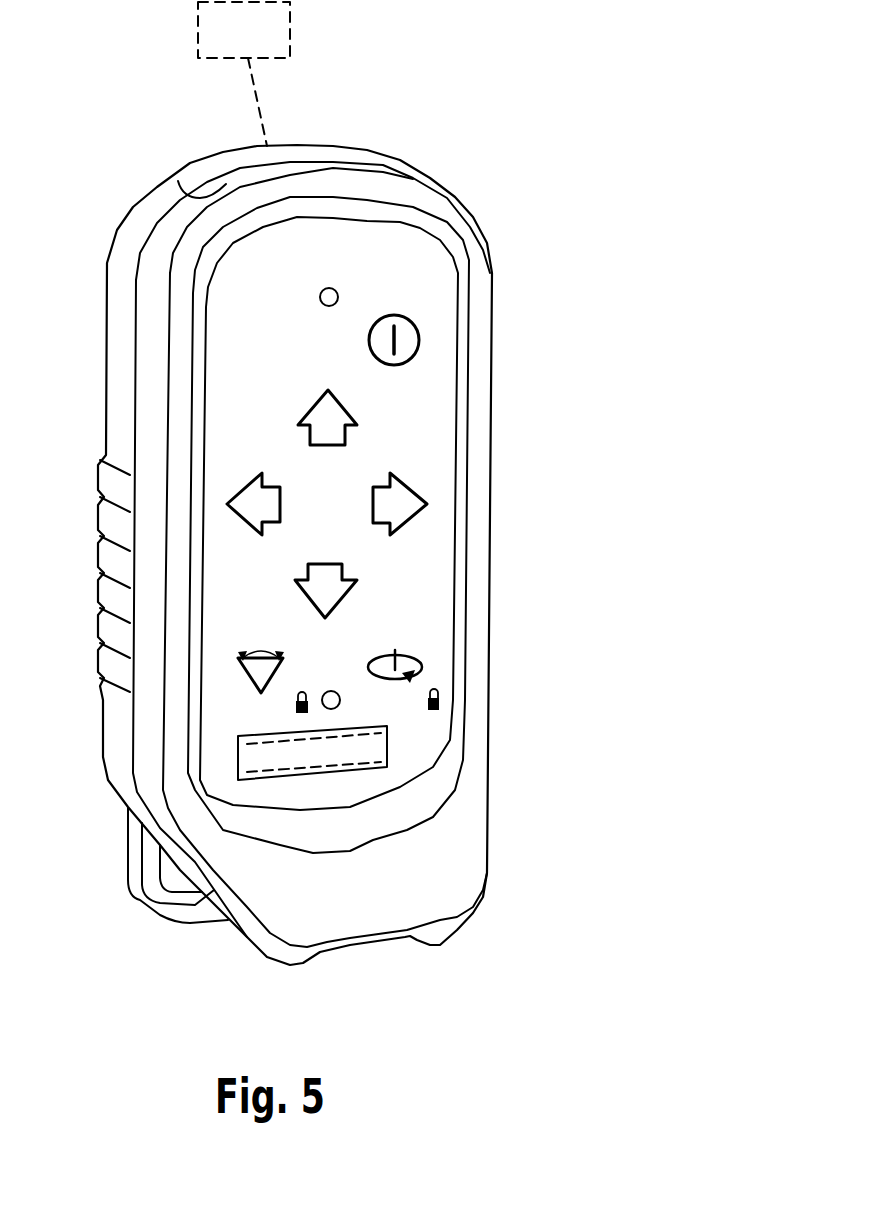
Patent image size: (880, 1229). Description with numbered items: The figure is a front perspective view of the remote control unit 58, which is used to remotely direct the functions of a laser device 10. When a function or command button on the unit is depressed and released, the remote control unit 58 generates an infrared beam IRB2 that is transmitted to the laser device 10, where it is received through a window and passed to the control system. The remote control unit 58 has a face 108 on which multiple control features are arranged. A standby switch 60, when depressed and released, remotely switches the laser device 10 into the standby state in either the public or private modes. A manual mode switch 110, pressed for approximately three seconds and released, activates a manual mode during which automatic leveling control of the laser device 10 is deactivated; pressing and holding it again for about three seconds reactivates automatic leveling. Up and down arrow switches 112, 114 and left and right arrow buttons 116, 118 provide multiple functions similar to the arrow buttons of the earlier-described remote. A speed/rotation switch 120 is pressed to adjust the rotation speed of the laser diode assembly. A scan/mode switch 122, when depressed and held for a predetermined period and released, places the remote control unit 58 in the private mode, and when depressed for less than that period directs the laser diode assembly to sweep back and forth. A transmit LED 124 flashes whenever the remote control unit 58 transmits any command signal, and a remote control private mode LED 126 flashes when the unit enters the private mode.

The laser device 10 is at (197, 28).
The infrared beam IRB2 is at (257, 90).
The remote control unit 58 is at (496, 152).
The standby switch 60 is at (419, 343).
The face 108 is at (413, 278).
The manual mode switch 110 is at (240, 347).
The up arrow switch 112 is at (322, 430).
The down arrow switch 114 is at (320, 590).
The left arrow button 116 is at (398, 508).
The right arrow button 118 is at (247, 503).
The speed/rotation switch 120 is at (425, 667).
The scan/mode switch 122 is at (250, 677).
The transmit LED 124 is at (329, 288).
The remote control private mode LED 126 is at (338, 705).